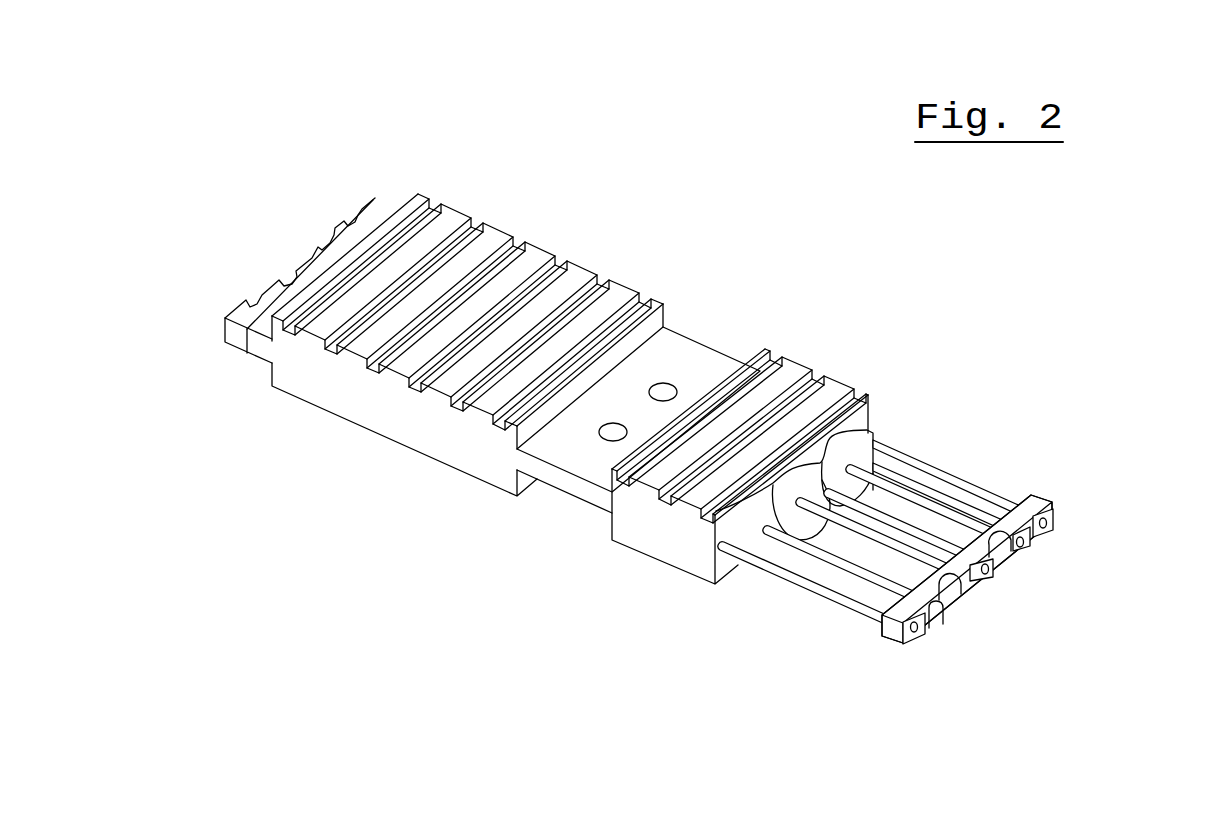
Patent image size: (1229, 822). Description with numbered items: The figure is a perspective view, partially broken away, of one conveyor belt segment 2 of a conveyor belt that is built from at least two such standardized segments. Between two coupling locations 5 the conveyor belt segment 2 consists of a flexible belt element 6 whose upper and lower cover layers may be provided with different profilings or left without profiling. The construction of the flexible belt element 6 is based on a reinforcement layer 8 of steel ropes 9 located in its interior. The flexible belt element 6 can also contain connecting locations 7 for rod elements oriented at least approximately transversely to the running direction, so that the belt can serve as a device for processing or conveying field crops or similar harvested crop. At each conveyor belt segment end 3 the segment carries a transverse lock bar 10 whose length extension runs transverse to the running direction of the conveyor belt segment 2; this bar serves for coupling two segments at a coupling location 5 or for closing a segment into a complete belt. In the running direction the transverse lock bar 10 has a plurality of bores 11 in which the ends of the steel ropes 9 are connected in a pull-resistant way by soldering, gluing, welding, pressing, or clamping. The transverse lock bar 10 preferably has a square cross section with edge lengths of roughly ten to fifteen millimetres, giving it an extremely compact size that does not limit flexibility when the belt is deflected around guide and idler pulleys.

The conveyor belt segment 2 is at (621, 129).
The conveyor belt segment end 3 is at (254, 232).
The coupling location 5 is at (416, 139).
The flexible belt element 6 is at (466, 201).
The connecting location 7 is at (723, 321).
The reinforcement layer 8 is at (766, 612).
The steel rope 9 is at (833, 598).
The transverse lock bar 10 is at (902, 647).
The bore 11 is at (971, 582).